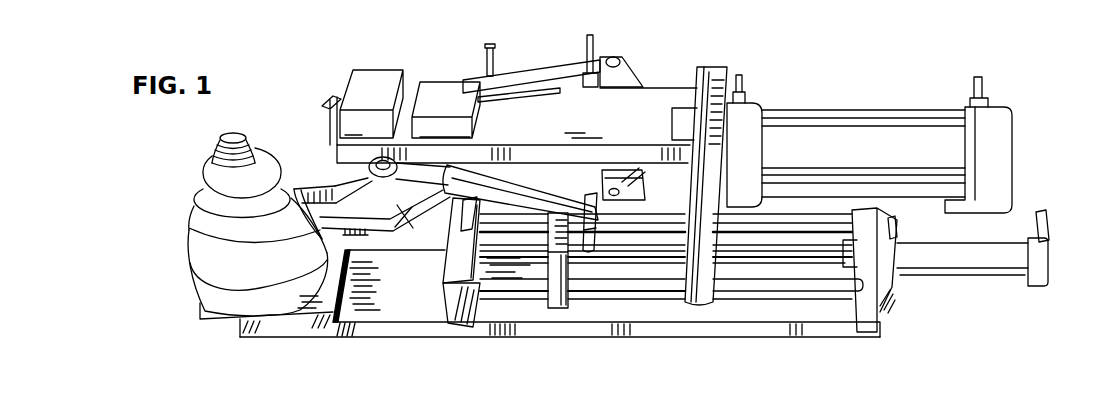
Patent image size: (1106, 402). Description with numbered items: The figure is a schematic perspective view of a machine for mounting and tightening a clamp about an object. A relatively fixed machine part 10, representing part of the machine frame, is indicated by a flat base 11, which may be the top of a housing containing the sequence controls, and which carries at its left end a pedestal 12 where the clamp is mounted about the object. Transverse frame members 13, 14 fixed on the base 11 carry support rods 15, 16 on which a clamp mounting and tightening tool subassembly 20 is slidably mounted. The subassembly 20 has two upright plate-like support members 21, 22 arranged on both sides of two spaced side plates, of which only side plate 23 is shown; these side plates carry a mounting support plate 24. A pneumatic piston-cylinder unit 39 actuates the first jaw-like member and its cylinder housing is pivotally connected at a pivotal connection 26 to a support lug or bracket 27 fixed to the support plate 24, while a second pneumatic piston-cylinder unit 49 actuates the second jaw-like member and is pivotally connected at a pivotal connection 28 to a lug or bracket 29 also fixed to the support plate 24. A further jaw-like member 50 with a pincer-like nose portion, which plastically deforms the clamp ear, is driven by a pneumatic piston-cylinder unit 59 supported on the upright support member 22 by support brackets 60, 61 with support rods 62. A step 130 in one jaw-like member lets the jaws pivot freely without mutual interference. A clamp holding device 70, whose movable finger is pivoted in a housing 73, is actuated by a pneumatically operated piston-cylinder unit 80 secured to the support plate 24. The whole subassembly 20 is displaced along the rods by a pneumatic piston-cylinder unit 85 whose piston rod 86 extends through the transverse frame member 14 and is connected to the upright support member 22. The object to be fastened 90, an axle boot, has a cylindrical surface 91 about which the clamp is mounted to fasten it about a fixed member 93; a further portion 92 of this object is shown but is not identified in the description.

The relatively fixed machine part 10 is at (750, 347).
The flat base 11 is at (383, 331).
The pedestal 12 is at (314, 314).
The transverse frame member 13 is at (467, 328).
The transverse frame member 14 is at (885, 315).
The support rod 15 is at (834, 300).
The support rod 16 is at (787, 215).
The clamp mounting and tightening tool subassembly 20 is at (677, 52).
The upright plate-like support member 21 is at (562, 309).
The upright plate-like support member 22 is at (698, 304).
The side plate 23 is at (663, 254).
The mounting support plate 24 is at (605, 124).
The pivotal connection 26 is at (641, 247).
The support lug or bracket 27 is at (638, 186).
The pivotal connection 28 is at (614, 56).
The lug or bracket 29 is at (623, 78).
The pneumatic piston-cylinder unit 39 is at (528, 185).
The pneumatic piston-cylinder unit 49 is at (535, 69).
The jaw-like member 50 is at (385, 204).
The pneumatic piston-cylinder unit 59 is at (874, 134).
The support bracket 60 is at (992, 131).
The support bracket 61 is at (752, 116).
The support rods 62 is at (832, 110).
The clamp holding device 70 is at (319, 132).
The housing 73 is at (442, 97).
The pneumatically operated piston-cylinder unit 80 is at (387, 64).
The pneumatic piston-cylinder unit 85 is at (972, 266).
The piston rod 86 is at (793, 260).
The object to be fastened 90 is at (185, 230).
The cylindrical surface 91 is at (200, 193).
The drum 92 is at (203, 288).
The fixed member 93 is at (221, 136).
The step 130 is at (321, 186).